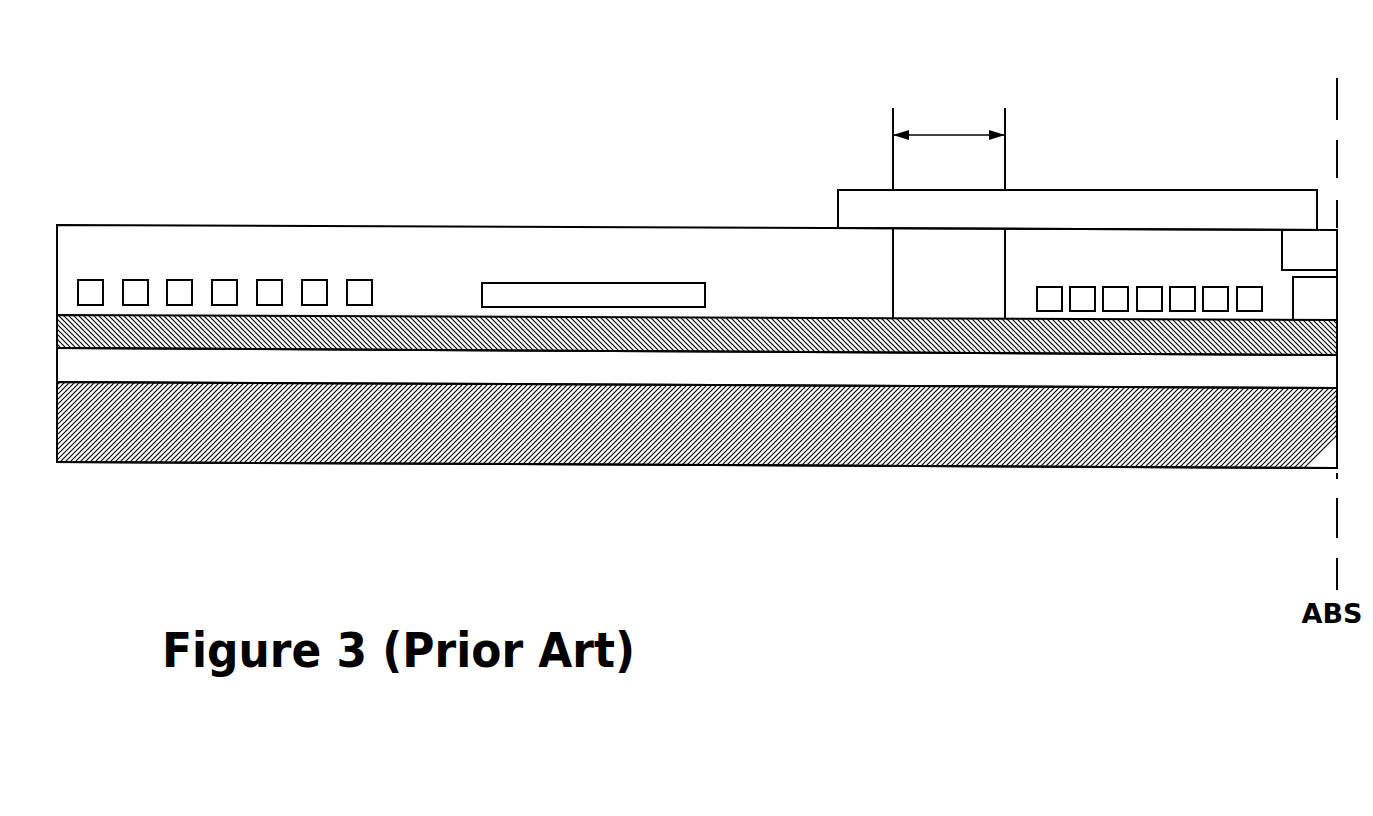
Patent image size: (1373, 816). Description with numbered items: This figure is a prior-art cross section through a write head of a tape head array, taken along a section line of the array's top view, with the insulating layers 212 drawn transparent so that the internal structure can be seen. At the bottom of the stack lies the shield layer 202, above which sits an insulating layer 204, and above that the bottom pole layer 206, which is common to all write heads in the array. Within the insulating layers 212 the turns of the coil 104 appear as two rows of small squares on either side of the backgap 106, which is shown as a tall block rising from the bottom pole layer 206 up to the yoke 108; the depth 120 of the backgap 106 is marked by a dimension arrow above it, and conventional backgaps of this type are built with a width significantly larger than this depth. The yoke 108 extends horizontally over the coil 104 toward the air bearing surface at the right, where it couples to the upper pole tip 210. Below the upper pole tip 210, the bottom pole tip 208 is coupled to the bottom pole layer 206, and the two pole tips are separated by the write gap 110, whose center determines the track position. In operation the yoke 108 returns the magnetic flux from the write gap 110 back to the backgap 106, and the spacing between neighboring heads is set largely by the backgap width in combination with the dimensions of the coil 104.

The coil 104 is at (282, 293).
The backgap 106 is at (948, 275).
The yoke 108 is at (1088, 213).
The write gap 110 is at (1333, 275).
The depth 120 is at (949, 114).
The shield layer 202 is at (672, 438).
The insulating layer 204 is at (758, 380).
The bottom pole layer 206 is at (695, 335).
The bottom pole tip 208 is at (1305, 303).
The upper pole tip 210 is at (1310, 252).
The insulating layers 212 is at (452, 272).